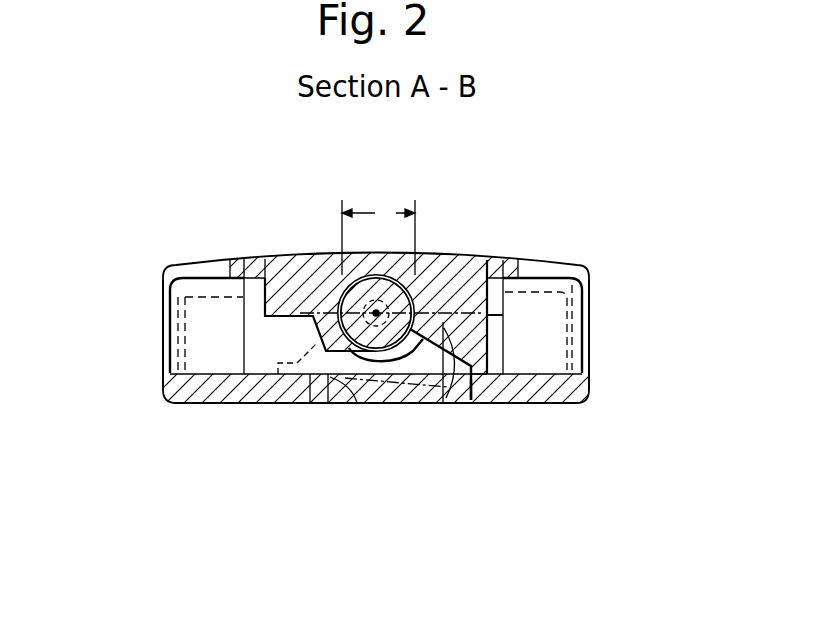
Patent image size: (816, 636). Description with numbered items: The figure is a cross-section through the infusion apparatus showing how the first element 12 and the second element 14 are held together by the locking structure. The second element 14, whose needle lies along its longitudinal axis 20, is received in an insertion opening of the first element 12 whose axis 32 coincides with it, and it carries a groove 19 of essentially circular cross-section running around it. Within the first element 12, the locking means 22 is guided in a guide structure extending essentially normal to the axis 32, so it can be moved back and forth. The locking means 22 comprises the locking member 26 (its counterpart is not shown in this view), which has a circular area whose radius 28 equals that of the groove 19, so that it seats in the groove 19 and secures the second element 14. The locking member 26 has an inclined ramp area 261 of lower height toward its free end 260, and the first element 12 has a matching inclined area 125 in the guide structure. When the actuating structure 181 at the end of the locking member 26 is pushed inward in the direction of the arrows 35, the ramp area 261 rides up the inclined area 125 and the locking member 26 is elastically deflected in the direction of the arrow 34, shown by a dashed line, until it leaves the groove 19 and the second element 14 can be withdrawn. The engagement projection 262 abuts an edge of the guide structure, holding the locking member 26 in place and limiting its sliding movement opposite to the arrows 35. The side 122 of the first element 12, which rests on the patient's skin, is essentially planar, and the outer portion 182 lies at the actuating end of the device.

The first element 12 is at (230, 407).
The second element 14 is at (428, 258).
The groove 19 is at (265, 273).
The longitudinal axis 20 is at (376, 313).
The axis of the insertion opening 32 is at (376, 313).
The locking means 22 is at (253, 356).
The locking member 26 is at (280, 378).
The radius 28 is at (381, 213).
The arrow 34 is at (443, 390).
The arrows 35 is at (158, 243).
The side 122 is at (309, 418).
The inclined area 125 is at (485, 258).
The actuating structure 181 is at (200, 342).
The side wall 182 is at (158, 318).
The free end 260 is at (471, 399).
The inclined ramp area 261 is at (479, 395).
The engagement projection 262 is at (355, 400).